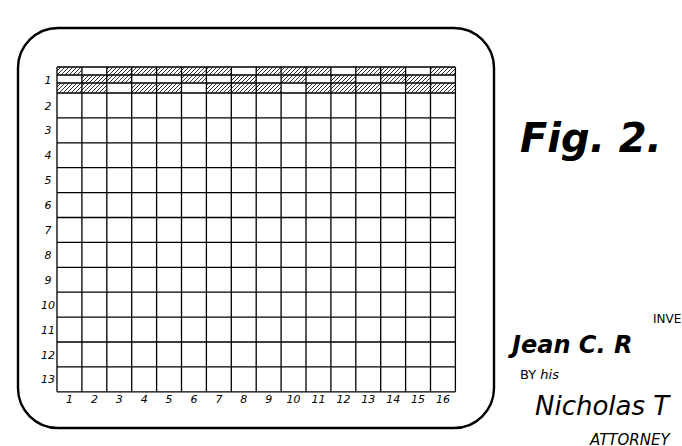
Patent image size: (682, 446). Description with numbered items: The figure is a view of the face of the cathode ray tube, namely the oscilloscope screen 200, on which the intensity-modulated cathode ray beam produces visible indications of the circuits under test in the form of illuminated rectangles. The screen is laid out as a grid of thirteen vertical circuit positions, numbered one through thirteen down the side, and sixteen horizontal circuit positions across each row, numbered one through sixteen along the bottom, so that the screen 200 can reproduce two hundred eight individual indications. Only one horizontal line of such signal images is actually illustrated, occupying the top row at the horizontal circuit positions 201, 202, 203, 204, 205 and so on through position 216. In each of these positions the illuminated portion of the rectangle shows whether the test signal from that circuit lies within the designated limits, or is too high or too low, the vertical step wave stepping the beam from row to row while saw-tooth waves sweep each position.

The oscilloscope screen 200 is at (265, 28).
The horizontal circuit position 201 is at (64, 47).
The horizontal circuit position 202 is at (88, 73).
The horizontal circuit position 203 is at (117, 70).
The horizontal circuit position 204 is at (137, 69).
The horizontal circuit position 205 is at (173, 68).
The horizontal circuit position 216 is at (440, 64).